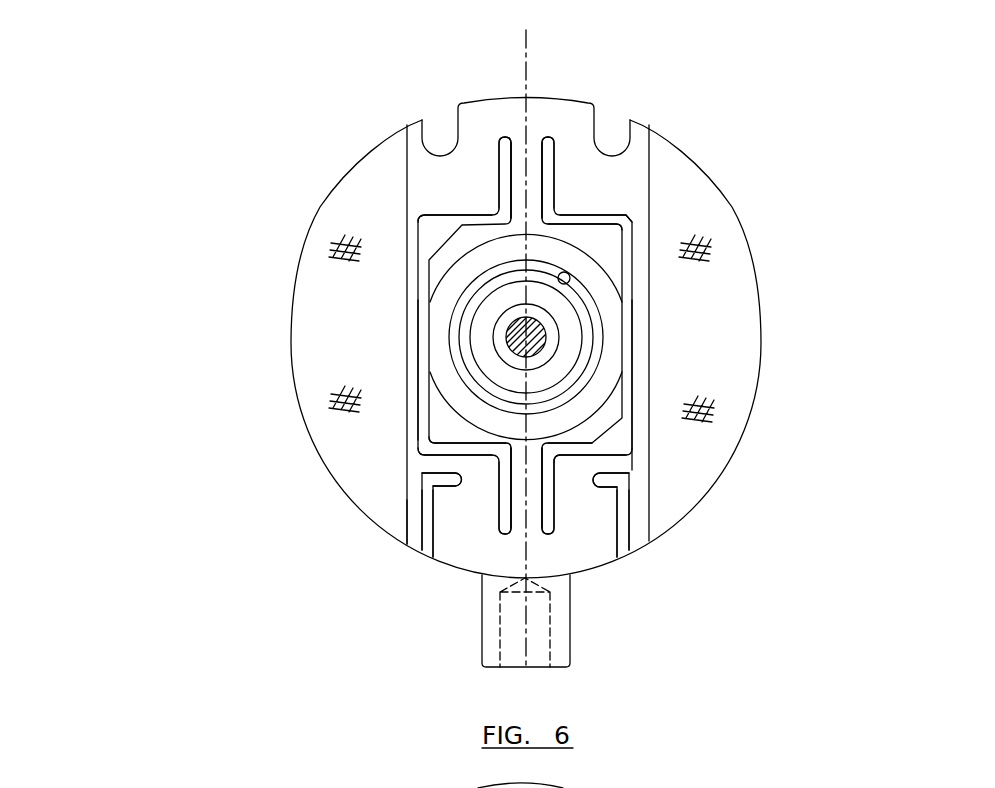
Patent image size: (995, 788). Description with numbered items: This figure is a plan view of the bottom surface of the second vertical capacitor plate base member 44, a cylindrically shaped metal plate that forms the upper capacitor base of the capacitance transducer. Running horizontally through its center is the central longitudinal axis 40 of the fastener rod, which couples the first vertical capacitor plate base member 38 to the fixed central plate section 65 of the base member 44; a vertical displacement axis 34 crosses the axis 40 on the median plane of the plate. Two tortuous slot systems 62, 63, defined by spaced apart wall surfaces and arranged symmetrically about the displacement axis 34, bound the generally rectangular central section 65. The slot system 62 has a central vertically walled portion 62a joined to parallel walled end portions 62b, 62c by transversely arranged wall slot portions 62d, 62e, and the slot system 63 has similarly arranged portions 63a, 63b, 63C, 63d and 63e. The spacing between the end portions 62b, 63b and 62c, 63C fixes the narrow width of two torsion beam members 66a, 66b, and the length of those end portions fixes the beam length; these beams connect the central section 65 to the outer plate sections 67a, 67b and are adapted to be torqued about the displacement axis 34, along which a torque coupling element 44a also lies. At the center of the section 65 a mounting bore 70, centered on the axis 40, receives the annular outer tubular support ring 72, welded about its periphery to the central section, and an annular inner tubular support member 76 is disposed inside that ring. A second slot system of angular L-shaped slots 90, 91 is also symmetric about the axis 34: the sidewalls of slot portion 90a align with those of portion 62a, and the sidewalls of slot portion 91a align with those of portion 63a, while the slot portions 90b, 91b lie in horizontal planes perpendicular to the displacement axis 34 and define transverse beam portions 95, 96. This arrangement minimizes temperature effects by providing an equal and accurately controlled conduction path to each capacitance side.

The displacement axis 34 is at (530, 52).
The first vertical capacitor plate base member 38 is at (728, 787).
The central longitudinal axis 40 is at (522, 339).
The second vertical capacitor plate base member 44 is at (291, 349).
The torque coupling element 44a is at (570, 572).
The slot system 62 is at (422, 397).
The central vertically walled portion 62a is at (420, 365).
The walled end portion 62b is at (497, 537).
The walled end portion 62c is at (498, 192).
The transversely arranged wall slot portion 62d is at (500, 512).
The transversely arranged wall slot portion 62e is at (460, 217).
The slot system 63 is at (628, 243).
The central vertically walled portion 63a is at (630, 378).
The walled end portion 63b is at (546, 557).
The walled end portion 63C is at (542, 175).
The transversely arranged wall slot portion 63d is at (613, 476).
The transversely arranged wall slot portion 63e is at (588, 215).
The central plate section 65 is at (448, 428).
The torsion beam member 66a is at (530, 155).
The torsion beam member 66b is at (512, 540).
The outer plate section 67a is at (597, 545).
The outer plate section 67b is at (598, 200).
The mounting bore 70 is at (570, 280).
The outer tubular support ring 72 is at (590, 317).
The inner tubular support member 76 is at (588, 345).
The L-shaped slot 90 is at (427, 528).
The slot portion 90a is at (427, 553).
The slot portion 90b is at (452, 481).
The L-shaped slot 91 is at (628, 524).
The slot portion 91a is at (625, 557).
The slot portion 91b is at (608, 486).
The transverse beam portion 95 is at (440, 462).
The transverse beam portion 96 is at (635, 465).